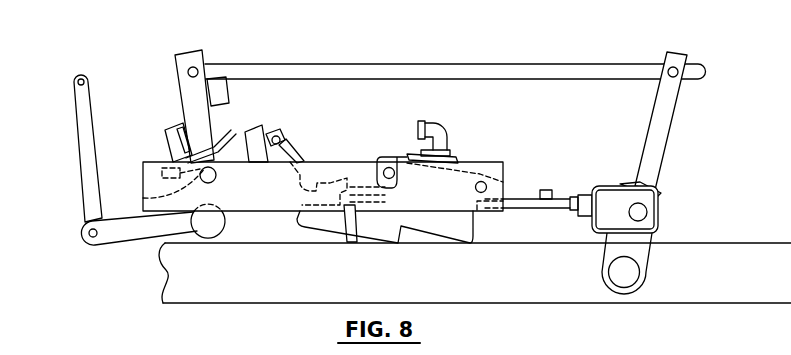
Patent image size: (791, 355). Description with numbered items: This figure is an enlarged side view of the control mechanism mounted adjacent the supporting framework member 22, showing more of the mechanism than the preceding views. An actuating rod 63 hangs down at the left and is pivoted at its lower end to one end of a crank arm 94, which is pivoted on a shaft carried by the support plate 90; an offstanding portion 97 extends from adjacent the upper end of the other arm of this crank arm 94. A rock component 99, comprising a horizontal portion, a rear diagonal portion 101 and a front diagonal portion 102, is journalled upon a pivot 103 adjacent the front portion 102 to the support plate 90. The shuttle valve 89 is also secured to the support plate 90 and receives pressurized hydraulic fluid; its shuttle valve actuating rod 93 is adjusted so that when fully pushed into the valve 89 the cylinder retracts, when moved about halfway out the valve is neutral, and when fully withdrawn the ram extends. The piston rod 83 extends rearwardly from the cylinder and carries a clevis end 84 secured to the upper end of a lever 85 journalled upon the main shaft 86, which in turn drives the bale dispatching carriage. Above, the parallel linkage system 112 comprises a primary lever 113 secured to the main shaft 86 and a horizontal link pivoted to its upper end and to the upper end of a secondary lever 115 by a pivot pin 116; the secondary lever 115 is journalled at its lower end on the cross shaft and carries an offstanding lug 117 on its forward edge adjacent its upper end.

The supporting framework member 22 is at (499, 247).
The actuating rod 63 is at (76, 133).
The piston rod 83 is at (566, 200).
The clevis end 84 is at (655, 201).
The lever 85 is at (643, 254).
The main shaft 86 is at (615, 268).
The shuttle valve 89 is at (468, 172).
The support plate 90 is at (280, 212).
The shuttle valve actuating rod 93 is at (362, 184).
The crank arm 94 is at (157, 239).
The offstanding portion 97 is at (166, 131).
The rock component 99 is at (143, 201).
The rear diagonal portion 101 is at (163, 169).
The front diagonal portion 102 is at (229, 136).
The pivot 103 is at (216, 171).
The parallel linkage system 112 is at (461, 64).
The primary lever 113 is at (672, 121).
The secondary lever 115 is at (180, 100).
The pivot pin 116 is at (199, 52).
The offstanding lug 117 is at (219, 82).